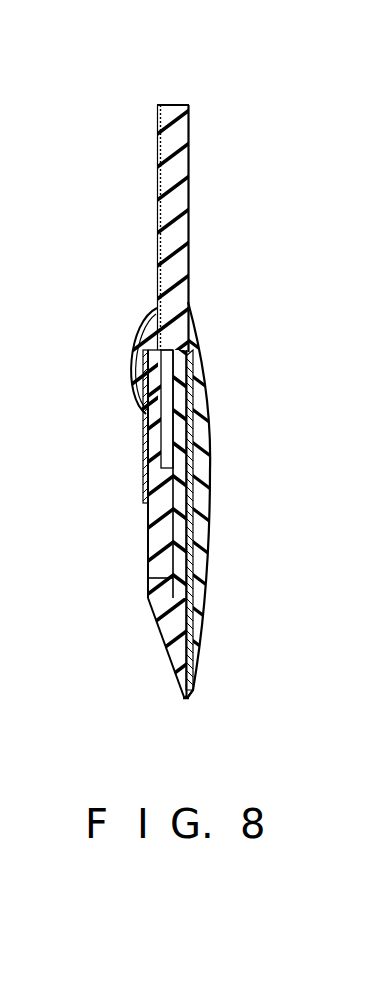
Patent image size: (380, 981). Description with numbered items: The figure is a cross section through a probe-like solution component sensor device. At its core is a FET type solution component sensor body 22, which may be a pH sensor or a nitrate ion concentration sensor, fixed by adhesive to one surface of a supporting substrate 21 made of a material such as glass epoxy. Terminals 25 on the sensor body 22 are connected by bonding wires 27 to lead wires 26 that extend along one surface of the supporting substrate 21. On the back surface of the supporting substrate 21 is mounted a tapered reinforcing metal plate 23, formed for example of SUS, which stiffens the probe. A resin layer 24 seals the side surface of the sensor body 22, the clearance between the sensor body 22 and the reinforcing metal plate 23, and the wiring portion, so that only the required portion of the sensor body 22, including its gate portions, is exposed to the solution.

The supporting substrate 21 is at (176, 162).
The FET type solution component sensor body 22 is at (158, 538).
The tapered reinforcing metal plate 23 is at (197, 627).
The resin layer 24 is at (172, 623).
The terminals 25 is at (137, 367).
The lead wires 26 is at (156, 213).
The bonding wires 27 is at (143, 330).